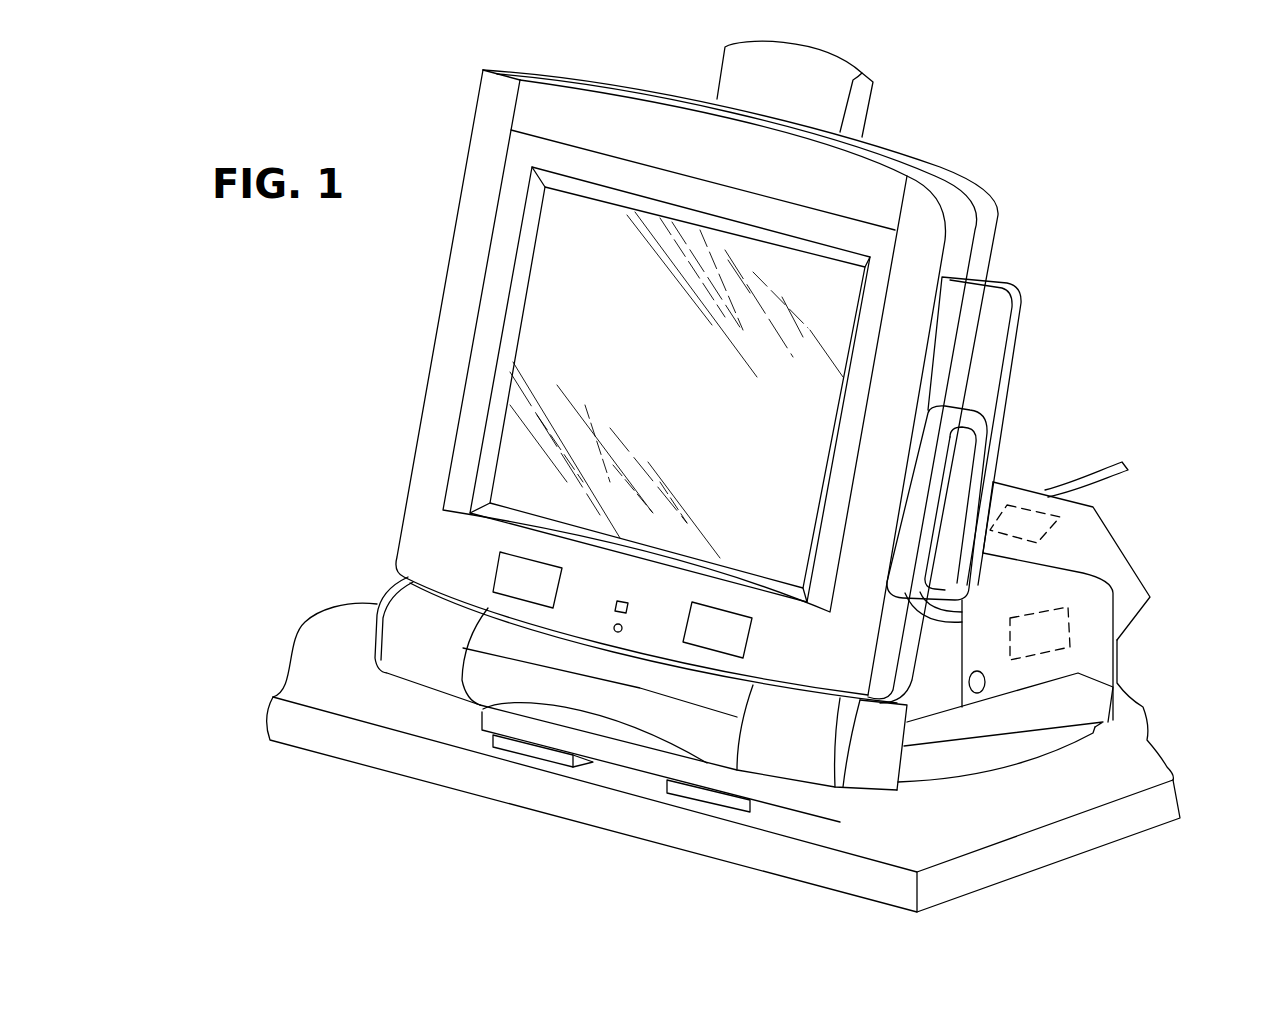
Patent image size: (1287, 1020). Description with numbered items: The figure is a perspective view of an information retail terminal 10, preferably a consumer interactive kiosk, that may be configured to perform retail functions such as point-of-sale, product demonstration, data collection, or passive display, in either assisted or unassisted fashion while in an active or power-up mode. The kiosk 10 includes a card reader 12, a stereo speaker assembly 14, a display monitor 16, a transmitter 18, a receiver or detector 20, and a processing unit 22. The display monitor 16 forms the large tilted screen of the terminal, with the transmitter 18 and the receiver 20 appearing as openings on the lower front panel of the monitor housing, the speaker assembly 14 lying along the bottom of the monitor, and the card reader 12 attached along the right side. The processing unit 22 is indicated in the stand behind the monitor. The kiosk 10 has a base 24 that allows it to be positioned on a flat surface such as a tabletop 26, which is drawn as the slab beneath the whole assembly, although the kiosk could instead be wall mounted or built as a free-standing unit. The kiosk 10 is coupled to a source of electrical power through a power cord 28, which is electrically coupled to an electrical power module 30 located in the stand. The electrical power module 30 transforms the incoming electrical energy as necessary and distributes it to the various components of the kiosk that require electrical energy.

The retail terminal 10 is at (1142, 119).
The card reader 12 is at (987, 378).
The stereo speaker assembly 14 is at (402, 618).
The display monitor 16 is at (553, 292).
The transmitter 18 is at (512, 570).
The receiver 20 is at (732, 630).
The processing unit 22 is at (1047, 640).
The base 24 is at (962, 750).
The tabletop 26 is at (845, 832).
The power cord 28 is at (1120, 473).
The electrical power module 30 is at (1017, 510).